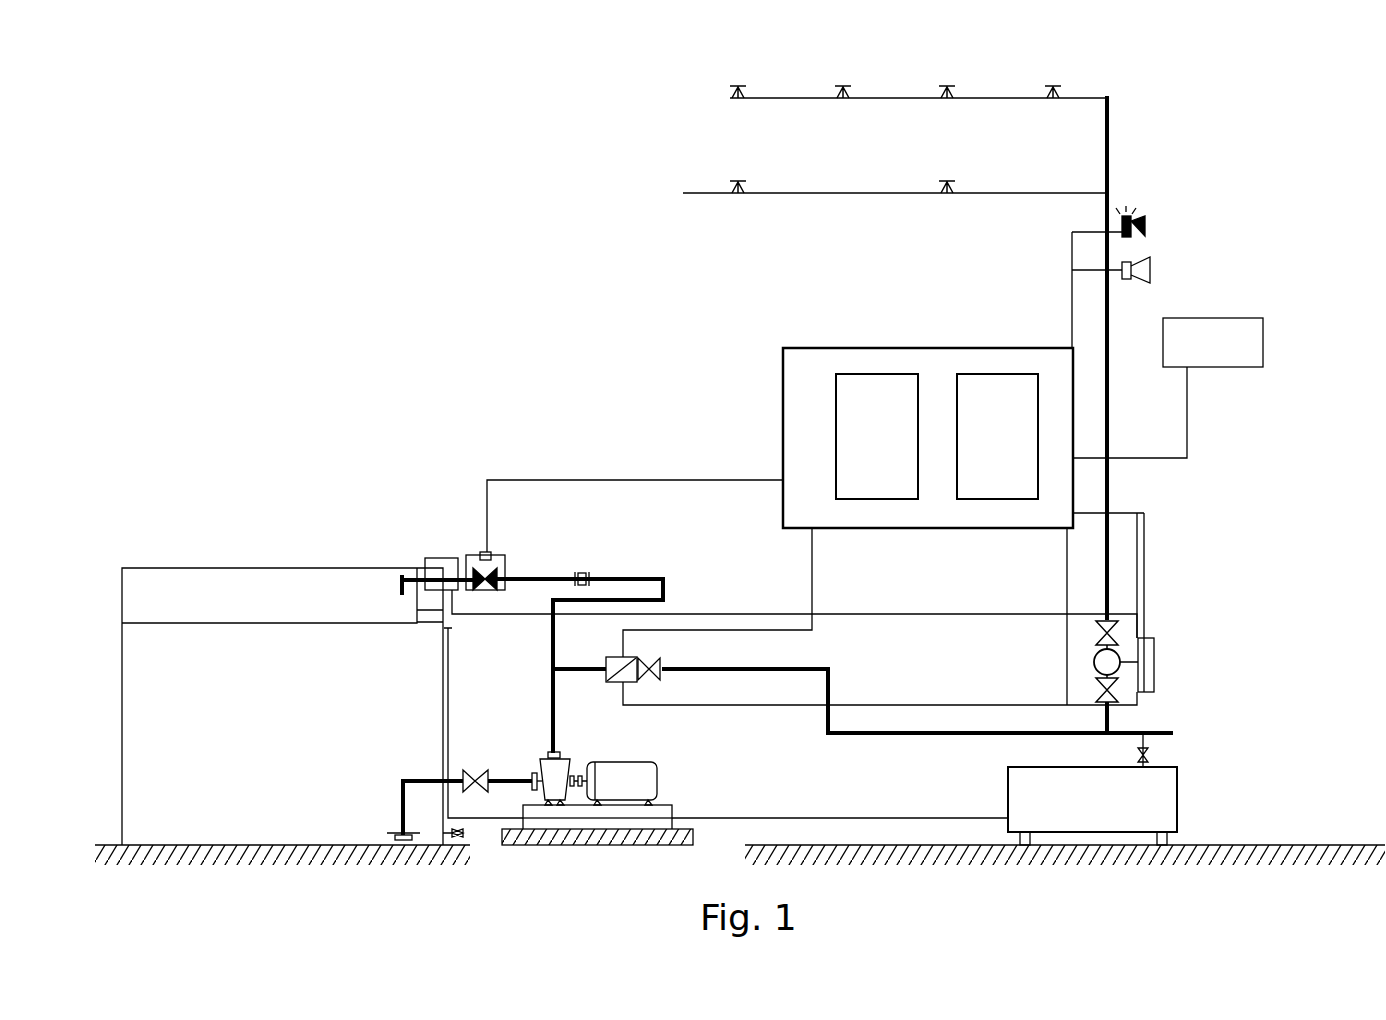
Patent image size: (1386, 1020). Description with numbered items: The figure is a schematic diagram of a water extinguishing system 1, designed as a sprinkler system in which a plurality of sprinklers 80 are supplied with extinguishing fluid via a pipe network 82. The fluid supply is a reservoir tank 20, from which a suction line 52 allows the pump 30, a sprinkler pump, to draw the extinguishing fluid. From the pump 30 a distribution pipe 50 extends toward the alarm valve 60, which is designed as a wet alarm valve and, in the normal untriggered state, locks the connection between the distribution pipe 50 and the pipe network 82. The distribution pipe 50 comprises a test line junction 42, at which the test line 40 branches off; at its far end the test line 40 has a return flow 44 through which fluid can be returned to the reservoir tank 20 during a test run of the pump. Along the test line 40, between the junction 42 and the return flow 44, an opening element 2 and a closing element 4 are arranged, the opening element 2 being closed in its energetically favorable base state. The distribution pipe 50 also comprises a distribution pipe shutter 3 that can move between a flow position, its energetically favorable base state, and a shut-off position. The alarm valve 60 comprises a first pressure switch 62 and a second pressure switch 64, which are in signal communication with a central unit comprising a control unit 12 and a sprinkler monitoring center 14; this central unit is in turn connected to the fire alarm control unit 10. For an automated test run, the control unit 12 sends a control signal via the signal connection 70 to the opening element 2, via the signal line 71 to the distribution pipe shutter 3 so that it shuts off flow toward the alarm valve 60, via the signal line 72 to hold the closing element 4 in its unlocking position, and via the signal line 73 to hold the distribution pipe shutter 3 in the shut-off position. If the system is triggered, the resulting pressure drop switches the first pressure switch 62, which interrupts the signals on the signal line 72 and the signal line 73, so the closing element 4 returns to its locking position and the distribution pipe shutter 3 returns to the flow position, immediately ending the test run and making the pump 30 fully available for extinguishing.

The water extinguishing system 1 is at (398, 168).
The opening element 2 is at (484, 568).
The distribution pipe shutter 3 is at (630, 683).
The closing element 4 is at (424, 558).
The fire alarm control unit 10 is at (1228, 314).
The control unit 12 is at (870, 393).
The sprinkler monitoring center 14 is at (1000, 393).
The reservoir tank 20 is at (145, 790).
The pump 30 is at (615, 752).
The test line 40 is at (552, 577).
The test line junction 42 is at (549, 668).
The return flow 44 is at (397, 583).
The distribution pipe 50 is at (880, 731).
The suction line 52 is at (398, 777).
The alarm valve 60 is at (1090, 656).
The first pressure switch 62 is at (1145, 697).
The second pressure switch 64 is at (1158, 660).
The signal connection 70 is at (594, 479).
The signal line 71 is at (737, 627).
The signal line 72 is at (943, 611).
The signal line 73 is at (1020, 702).
The sprinklers 80 is at (1050, 82).
The pipe network 82 is at (1112, 147).